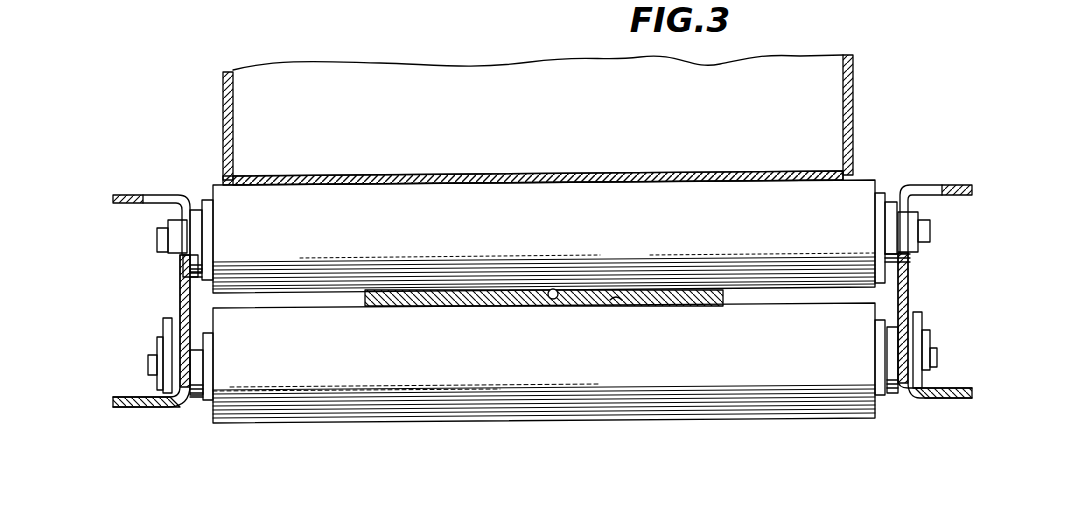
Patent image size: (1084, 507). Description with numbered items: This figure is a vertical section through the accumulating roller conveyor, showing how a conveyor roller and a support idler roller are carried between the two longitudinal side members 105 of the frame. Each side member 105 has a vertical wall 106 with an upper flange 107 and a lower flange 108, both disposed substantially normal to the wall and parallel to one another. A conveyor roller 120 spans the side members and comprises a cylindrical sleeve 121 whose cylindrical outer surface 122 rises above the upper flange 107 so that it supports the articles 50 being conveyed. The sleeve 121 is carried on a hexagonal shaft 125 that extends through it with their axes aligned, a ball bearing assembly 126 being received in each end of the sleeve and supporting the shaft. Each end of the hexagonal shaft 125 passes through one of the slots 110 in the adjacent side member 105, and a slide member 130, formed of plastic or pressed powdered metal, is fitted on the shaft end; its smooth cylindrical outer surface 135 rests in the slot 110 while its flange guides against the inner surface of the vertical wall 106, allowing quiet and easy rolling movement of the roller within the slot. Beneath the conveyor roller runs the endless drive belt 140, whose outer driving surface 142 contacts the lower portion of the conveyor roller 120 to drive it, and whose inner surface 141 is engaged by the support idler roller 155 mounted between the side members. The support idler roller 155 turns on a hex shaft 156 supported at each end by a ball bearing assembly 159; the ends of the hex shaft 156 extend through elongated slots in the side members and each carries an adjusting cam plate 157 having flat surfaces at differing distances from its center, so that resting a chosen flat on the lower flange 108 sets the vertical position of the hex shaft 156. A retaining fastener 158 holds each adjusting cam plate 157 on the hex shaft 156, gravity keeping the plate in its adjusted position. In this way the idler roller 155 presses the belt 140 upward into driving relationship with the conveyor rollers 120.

The articles 50 is at (226, 80).
The longitudinal side member 105 is at (170, 300).
The vertical wall 106 is at (180, 310).
The upper flange 107 is at (130, 195).
The lower flange 108 is at (150, 407).
The slot 110 is at (178, 195).
The conveyor roller 120 is at (474, 198).
The cylindrical sleeve 121 is at (712, 190).
The cylindrical outer surface 122 is at (590, 210).
The hexagonal shaft 125 is at (157, 240).
The ball bearing assembly 126 is at (207, 200).
The slide member 130 is at (168, 227).
The smooth cylindrical outer surface 135 is at (186, 270).
The drive belt 140 is at (452, 306).
The inner surface 141 is at (618, 300).
The outer driving surface 142 is at (560, 298).
The support idler roller 155 is at (496, 405).
The hex shaft 156 is at (148, 364).
The adjusting cam plate 157 is at (163, 332).
The retaining fastener 158 is at (157, 385).
The ball bearing assembly 159 is at (198, 397).